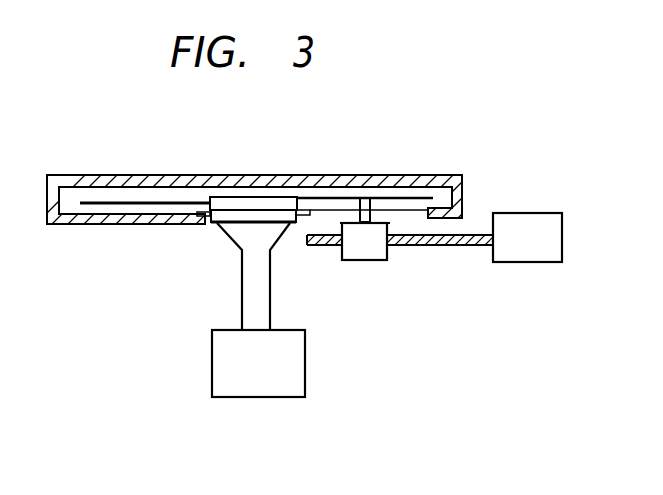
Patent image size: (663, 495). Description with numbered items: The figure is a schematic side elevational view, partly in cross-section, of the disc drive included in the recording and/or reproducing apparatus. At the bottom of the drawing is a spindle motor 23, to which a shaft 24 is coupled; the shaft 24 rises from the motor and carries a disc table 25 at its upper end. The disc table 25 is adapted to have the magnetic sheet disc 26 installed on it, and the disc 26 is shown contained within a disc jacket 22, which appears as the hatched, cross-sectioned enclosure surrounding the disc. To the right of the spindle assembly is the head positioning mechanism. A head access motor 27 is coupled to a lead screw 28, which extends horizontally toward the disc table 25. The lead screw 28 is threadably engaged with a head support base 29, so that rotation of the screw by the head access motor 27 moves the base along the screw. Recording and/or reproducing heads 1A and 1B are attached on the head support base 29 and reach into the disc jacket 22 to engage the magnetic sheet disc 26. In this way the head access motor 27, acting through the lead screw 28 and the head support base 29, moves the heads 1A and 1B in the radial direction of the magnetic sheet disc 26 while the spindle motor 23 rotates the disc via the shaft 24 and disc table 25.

The disc jacket 22 is at (164, 180).
The magnetic sheet disc 26 is at (131, 206).
The disc table 25 is at (214, 216).
The shaft 24 is at (271, 284).
The spindle motor 23 is at (305, 365).
The recording and/or reproducing head 1A is at (390, 199).
The recording and/or reproducing head 1B is at (353, 199).
The head support base 29 is at (365, 261).
The lead screw 28 is at (447, 246).
The head access motor 27 is at (530, 263).